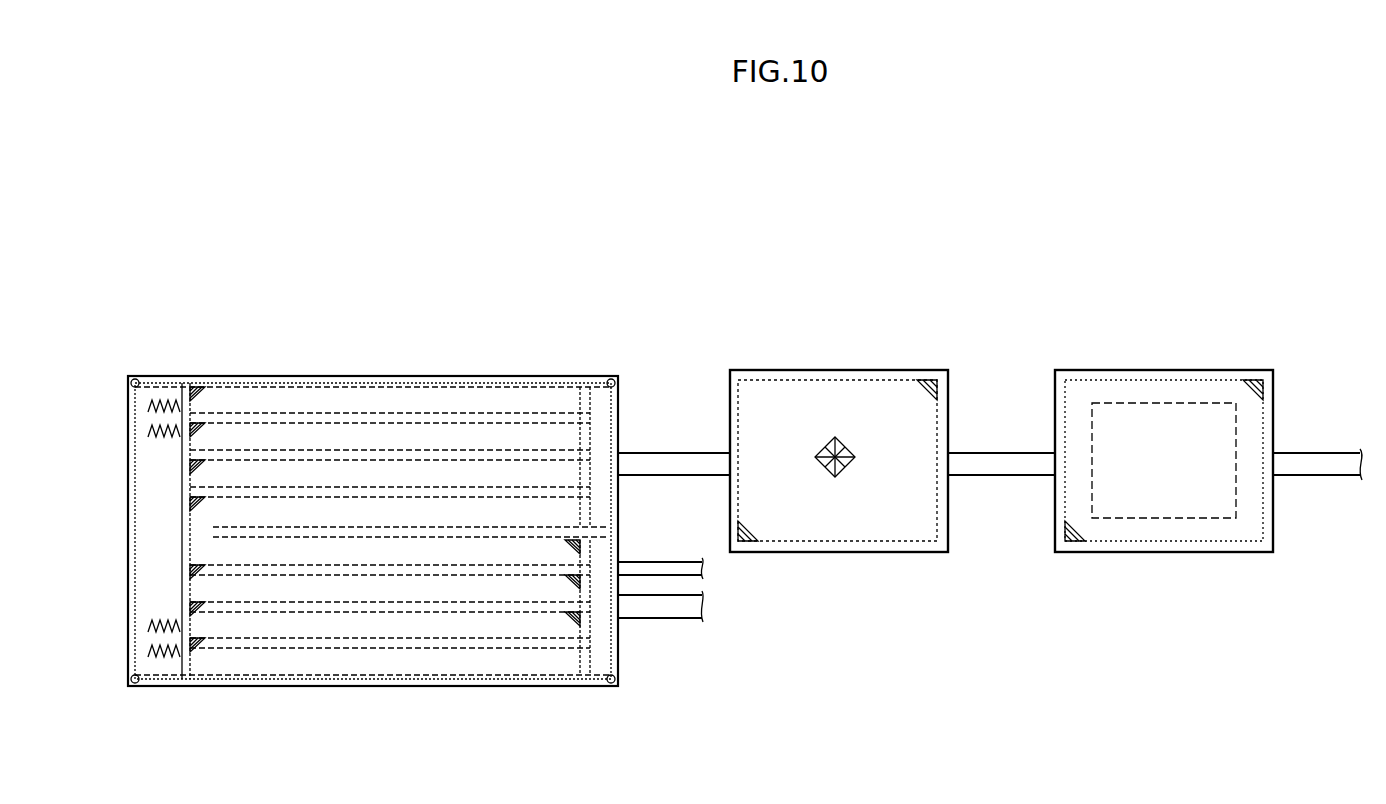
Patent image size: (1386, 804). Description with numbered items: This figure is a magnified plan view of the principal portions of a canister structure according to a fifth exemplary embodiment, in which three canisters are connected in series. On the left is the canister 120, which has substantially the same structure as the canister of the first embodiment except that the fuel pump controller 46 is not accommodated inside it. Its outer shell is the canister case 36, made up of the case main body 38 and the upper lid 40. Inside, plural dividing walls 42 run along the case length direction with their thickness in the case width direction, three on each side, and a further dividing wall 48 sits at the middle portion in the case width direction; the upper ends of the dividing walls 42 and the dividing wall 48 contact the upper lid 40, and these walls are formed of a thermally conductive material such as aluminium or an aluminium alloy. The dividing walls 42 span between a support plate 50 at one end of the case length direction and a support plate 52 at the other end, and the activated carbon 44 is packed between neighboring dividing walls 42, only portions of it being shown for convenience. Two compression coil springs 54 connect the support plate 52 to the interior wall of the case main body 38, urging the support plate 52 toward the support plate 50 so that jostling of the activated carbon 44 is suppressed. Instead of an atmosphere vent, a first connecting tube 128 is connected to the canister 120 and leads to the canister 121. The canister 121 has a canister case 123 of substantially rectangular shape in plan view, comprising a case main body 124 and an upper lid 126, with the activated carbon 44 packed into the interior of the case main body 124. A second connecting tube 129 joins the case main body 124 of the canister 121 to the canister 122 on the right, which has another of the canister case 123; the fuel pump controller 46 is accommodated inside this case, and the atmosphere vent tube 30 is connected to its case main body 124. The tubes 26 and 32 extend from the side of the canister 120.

The canister 120 is at (445, 250).
The canister 121 is at (996, 406).
The canister 122 is at (1063, 423).
The canister case 123 is at (1001, 428).
The case main body 124 is at (790, 553).
The upper lid 126 is at (864, 508).
The first connecting tube 128 is at (690, 450).
The second connecting tube 129 is at (985, 452).
The atmosphere vent tube 30 is at (1343, 450).
The inlet pipe 26 is at (673, 620).
The outlet pipe 32 is at (663, 560).
The canister case 36 is at (493, 352).
The case main body 38 is at (310, 377).
The upper lid 40 is at (247, 400).
The dividing wall 42 is at (555, 487).
The activated carbon 44 is at (565, 622).
The fuel pump controller 46 is at (1167, 400).
The dividing wall 48 is at (360, 527).
The support plate 50 is at (605, 428).
The support plate 52 is at (178, 478).
The compression coil spring 54 is at (163, 392).